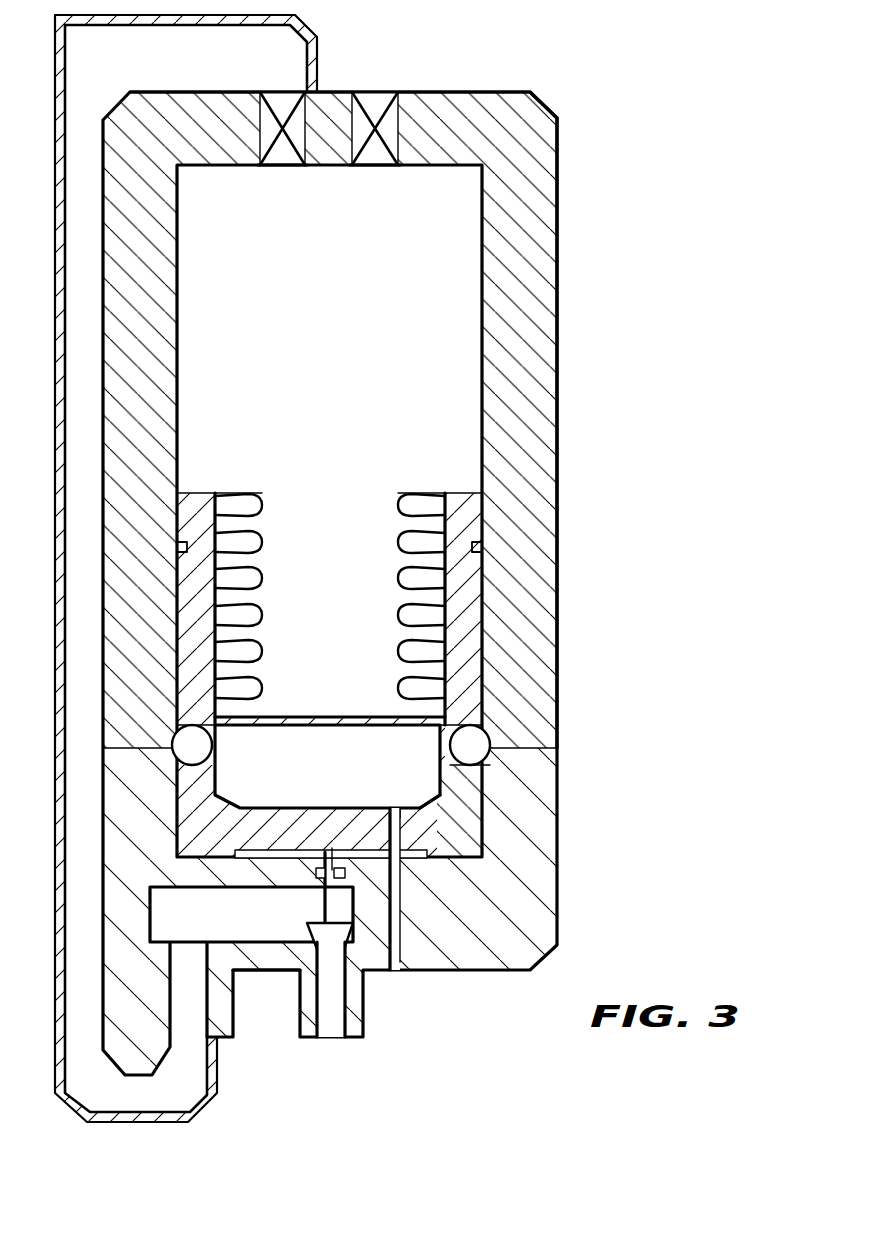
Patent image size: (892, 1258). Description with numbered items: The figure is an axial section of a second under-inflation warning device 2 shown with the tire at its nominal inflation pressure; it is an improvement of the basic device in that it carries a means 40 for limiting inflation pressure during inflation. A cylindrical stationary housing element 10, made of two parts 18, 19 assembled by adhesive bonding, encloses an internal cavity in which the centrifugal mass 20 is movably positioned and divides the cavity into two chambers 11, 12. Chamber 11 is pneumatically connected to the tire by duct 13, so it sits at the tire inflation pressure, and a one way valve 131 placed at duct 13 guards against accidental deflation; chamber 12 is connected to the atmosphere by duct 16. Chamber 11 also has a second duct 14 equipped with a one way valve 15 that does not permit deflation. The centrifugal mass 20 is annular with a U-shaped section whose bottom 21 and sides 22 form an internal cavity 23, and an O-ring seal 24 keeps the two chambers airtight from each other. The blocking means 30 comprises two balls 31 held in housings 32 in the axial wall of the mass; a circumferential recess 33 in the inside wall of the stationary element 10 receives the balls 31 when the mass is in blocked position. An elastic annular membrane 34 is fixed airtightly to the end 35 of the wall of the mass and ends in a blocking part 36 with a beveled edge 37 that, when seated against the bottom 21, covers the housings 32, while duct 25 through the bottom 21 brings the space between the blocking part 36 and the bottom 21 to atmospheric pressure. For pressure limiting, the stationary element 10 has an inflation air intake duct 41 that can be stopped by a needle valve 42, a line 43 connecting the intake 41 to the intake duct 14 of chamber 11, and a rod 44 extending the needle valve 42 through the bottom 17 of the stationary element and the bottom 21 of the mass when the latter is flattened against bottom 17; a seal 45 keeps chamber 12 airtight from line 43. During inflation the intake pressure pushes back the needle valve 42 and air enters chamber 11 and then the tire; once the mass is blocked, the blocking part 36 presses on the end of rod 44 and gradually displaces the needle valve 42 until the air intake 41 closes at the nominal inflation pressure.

The under-inflation warning device 2 is at (560, 90).
The stationary housing element 10 is at (547, 180).
The chamber 11 is at (467, 327).
The chamber 12 is at (284, 840).
The duct 13 is at (366, 110).
The one way valve 131 is at (387, 166).
The second duct 14 is at (293, 166).
The one way valve 15 is at (273, 110).
The duct 16 is at (396, 965).
The bottom of stationary element 17 is at (545, 893).
The part of stationary element 18 is at (530, 229).
The part of stationary element 19 is at (540, 857).
The centrifugal mass 20 is at (450, 660).
The bottom of centrifugal mass 21 is at (242, 830).
The sides of centrifugal mass 22 is at (465, 608).
The cavity 23 is at (455, 686).
The O-ring seal 24 is at (482, 547).
The duct 25 is at (396, 812).
The blocking means 30 is at (340, 700).
The balls 31 is at (463, 742).
The housings 32 is at (480, 766).
The circumferential recess 33 is at (482, 730).
The elastic annular membrane 34 is at (403, 506).
The end of wall of centrifugal mass 35 is at (453, 493).
The blocking part 36 is at (276, 715).
The beveled edge 37 is at (440, 806).
The means for limiting inflation pressure 40 is at (277, 950).
The inflation air intake duct 41 is at (334, 1038).
The needle valve 42 is at (333, 930).
The line 43 is at (75, 302).
The rod 44 is at (334, 845).
The seal 45 is at (315, 862).